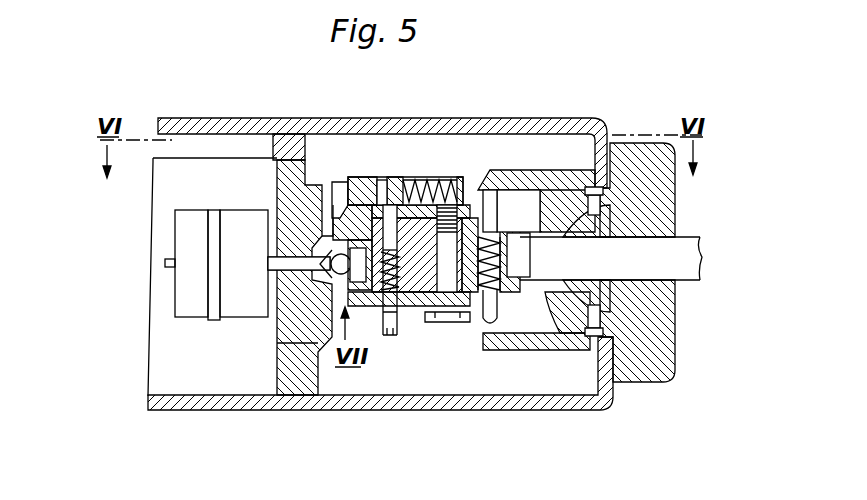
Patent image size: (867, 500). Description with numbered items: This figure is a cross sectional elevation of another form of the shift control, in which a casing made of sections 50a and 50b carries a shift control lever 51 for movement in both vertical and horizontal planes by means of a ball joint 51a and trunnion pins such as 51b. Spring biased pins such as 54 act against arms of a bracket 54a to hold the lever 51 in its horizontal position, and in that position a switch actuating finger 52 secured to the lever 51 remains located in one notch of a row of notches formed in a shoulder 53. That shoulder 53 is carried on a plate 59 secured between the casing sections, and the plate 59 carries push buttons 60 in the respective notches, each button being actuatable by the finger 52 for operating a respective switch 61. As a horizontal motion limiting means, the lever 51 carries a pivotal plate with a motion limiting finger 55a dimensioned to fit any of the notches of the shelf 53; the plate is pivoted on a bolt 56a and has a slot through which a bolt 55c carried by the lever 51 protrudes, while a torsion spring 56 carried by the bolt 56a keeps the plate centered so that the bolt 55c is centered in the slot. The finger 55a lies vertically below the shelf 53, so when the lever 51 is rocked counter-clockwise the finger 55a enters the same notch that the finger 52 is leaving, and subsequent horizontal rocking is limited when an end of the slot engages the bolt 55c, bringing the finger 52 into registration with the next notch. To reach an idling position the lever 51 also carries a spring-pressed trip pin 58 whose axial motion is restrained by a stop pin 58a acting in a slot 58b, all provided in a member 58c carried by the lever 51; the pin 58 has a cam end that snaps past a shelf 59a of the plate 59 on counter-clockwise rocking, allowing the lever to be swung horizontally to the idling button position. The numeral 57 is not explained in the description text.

The casing section 50a is at (598, 128).
The casing section 50b is at (528, 407).
The shift control lever 51 is at (420, 190).
The ball joint 51a is at (662, 297).
The trunnion pin 51b is at (601, 198).
The switch actuating finger 52 is at (338, 283).
The shoulder 53 is at (318, 279).
The spring biased pin 54 is at (497, 198).
The bracket 54a is at (543, 178).
The motion limiting finger 55a is at (368, 307).
The bolt 55c is at (385, 332).
The torsion spring 56 is at (443, 322).
The bolt 56a is at (522, 332).
The valve body 57 is at (366, 200).
The trip pin 58 is at (341, 186).
The stop pin 58a is at (388, 182).
The slot 58b is at (430, 205).
The member 58c is at (455, 178).
The plate 59 is at (300, 186).
The shelf 59a is at (323, 180).
The push button 60 is at (275, 243).
The switch 61 is at (193, 220).